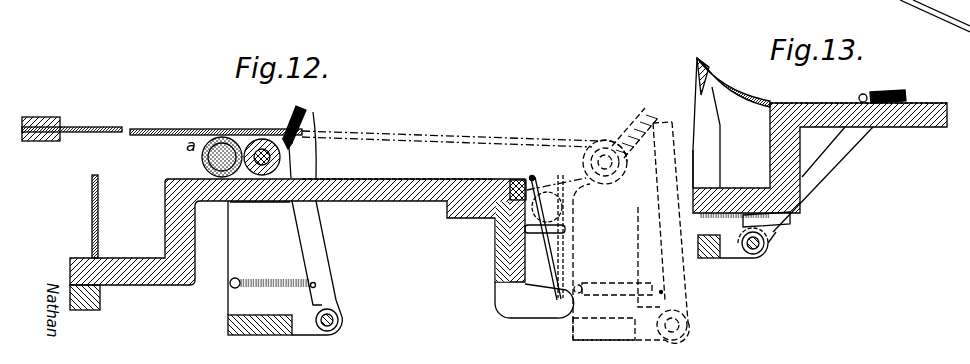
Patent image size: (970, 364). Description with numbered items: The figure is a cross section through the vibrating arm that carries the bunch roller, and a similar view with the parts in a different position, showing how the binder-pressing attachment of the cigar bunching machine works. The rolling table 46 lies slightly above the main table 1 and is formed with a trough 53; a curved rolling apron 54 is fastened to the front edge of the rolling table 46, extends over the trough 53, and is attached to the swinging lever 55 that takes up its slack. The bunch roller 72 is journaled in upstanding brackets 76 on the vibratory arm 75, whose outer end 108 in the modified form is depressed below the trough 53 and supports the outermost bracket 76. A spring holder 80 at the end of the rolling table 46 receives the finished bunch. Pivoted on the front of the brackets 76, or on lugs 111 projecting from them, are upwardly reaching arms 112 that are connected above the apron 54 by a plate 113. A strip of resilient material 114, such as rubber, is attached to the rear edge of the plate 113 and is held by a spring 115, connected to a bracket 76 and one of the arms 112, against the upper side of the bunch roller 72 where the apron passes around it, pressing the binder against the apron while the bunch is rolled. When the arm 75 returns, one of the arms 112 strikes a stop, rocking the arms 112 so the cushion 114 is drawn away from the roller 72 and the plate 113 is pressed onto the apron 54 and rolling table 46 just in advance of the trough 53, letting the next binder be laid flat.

In FIG. 12, the main table 1 is at (100, 298).
In FIG. 12, the rolling table 46 is at (400, 202).
In FIG. 13, the rolling table 46 is at (896, 128).
In FIG. 12, the trough 53 is at (113, 216).
In FIG. 13, the trough 53 is at (726, 169).
In FIG. 12, the rolling apron 54 is at (134, 136).
In FIG. 13, the rolling apron 54 is at (731, 93).
In FIG. 12, the swinging lever 55 is at (40, 141).
In FIG. 12, the bunch roller 72 is at (263, 139).
In FIG. 13, the bunch roller 72 is at (697, 73).
In FIG. 12, the vibratory arm 75 is at (228, 243).
In FIG. 13, the vibratory arm 75 is at (731, 137).
In FIG. 12, the upstanding brackets 76 is at (253, 206).
In FIG. 13, the upstanding brackets 76 is at (710, 114).
In FIG. 12, the spring holder 80 is at (545, 230).
In FIG. 12, the outer end of the arm 108 is at (256, 336).
In FIG. 13, the outer end of the arm 108 is at (707, 258).
In FIG. 12, the lugs 111 is at (305, 334).
In FIG. 12, the upwardly reaching arms 112 is at (318, 255).
In FIG. 13, the upwardly reaching arms 112 is at (828, 166).
In FIG. 12, the plate 113 is at (312, 110).
In FIG. 13, the plate 113 is at (906, 101).
In FIG. 12, the strip of resilient material 114 is at (300, 145).
In FIG. 13, the strip of resilient material 114 is at (861, 95).
In FIG. 12, the spring 115 is at (268, 280).
In FIG. 13, the spring 115 is at (772, 219).